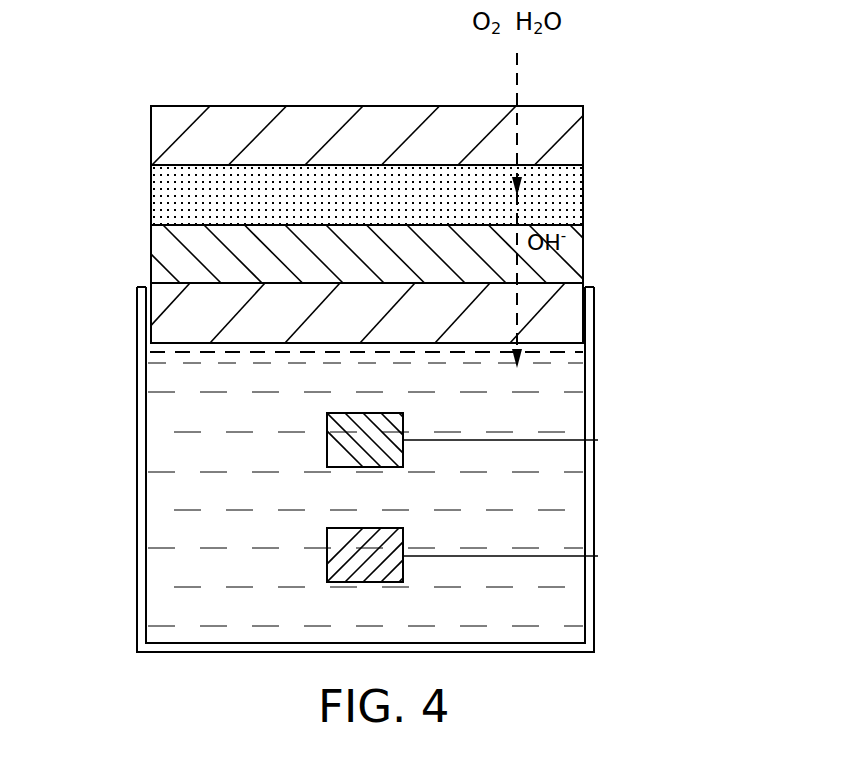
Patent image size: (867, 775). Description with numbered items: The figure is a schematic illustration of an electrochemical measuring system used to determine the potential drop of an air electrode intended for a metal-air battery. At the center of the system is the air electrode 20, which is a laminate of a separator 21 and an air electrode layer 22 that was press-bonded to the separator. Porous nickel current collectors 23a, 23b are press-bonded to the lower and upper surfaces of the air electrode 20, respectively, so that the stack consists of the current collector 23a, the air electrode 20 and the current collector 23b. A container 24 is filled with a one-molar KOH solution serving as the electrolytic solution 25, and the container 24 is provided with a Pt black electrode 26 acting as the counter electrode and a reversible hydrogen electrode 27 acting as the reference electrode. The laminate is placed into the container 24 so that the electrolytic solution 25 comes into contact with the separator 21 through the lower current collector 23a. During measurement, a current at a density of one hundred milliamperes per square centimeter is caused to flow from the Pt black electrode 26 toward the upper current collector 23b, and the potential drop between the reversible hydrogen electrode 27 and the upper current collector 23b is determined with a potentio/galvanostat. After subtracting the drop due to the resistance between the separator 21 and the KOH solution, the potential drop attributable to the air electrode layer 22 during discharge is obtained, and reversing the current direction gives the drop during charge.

The air electrode 20 is at (420, 224).
The separator 21 is at (391, 254).
The air electrode layer 22 is at (557, 198).
The porous nickel current collector 23a is at (555, 323).
The porous nickel current collector 23b is at (555, 135).
The container 24 is at (582, 404).
The electrolytic solution 25 is at (567, 523).
The Pt black electrode 26 is at (327, 572).
The reversible hydrogen electrode 27 is at (327, 443).